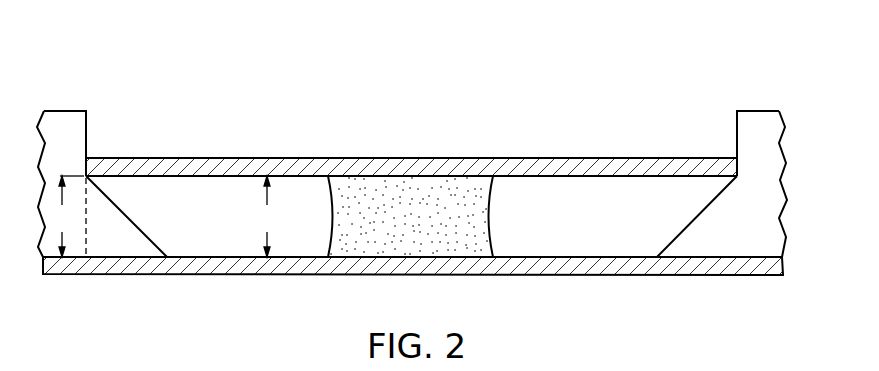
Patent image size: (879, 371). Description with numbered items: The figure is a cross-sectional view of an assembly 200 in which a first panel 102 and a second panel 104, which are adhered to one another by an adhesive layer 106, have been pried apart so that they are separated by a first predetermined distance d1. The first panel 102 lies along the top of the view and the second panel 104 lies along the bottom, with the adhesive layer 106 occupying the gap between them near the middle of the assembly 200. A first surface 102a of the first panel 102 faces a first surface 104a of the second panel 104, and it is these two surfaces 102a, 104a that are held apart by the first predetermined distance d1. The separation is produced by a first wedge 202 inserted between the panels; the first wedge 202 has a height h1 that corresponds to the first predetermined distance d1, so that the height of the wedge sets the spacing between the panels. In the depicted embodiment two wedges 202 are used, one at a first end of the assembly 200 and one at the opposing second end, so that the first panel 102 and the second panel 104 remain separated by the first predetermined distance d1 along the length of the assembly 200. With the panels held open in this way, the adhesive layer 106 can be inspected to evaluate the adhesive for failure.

The assembly 200 is at (113, 84).
The first panel 102 is at (613, 158).
The first surface of the first panel 102a is at (527, 178).
The second panel 104 is at (617, 275).
The first surface of the second panel 104a is at (530, 252).
The adhesive layer 106 is at (493, 217).
The first wedge 202 is at (137, 223).
The height of the first wedge h1 is at (69, 216).
The first predetermined distance d1 is at (270, 216).